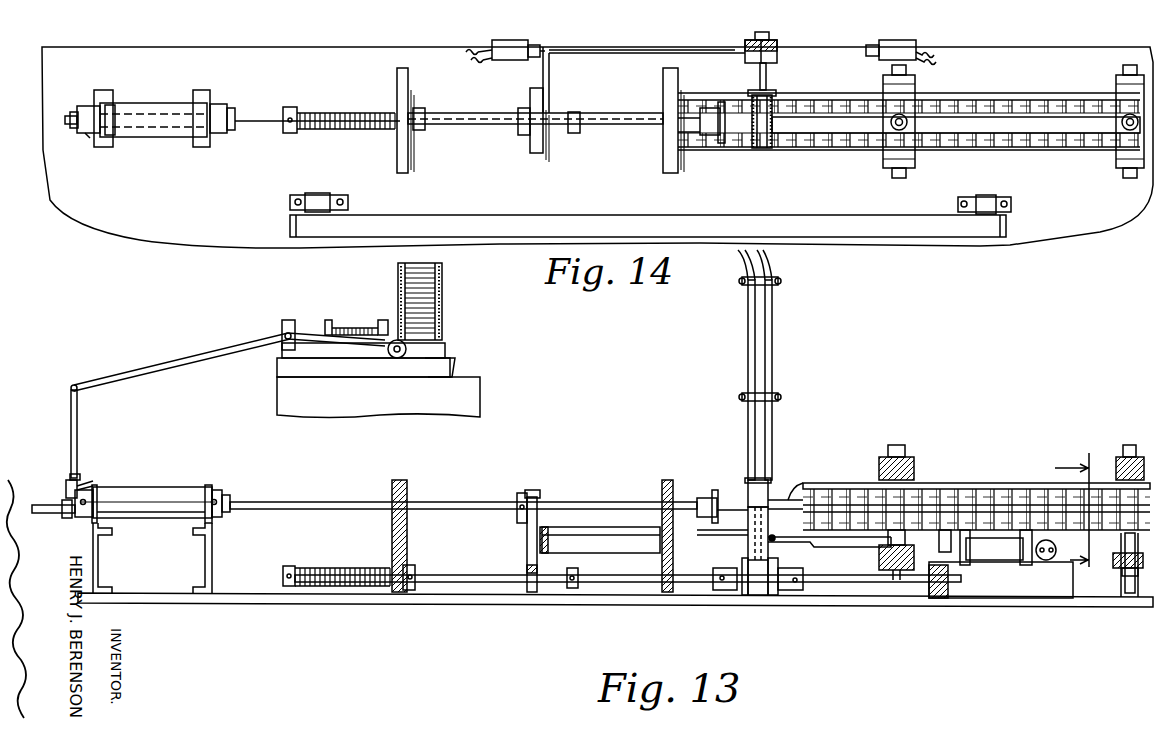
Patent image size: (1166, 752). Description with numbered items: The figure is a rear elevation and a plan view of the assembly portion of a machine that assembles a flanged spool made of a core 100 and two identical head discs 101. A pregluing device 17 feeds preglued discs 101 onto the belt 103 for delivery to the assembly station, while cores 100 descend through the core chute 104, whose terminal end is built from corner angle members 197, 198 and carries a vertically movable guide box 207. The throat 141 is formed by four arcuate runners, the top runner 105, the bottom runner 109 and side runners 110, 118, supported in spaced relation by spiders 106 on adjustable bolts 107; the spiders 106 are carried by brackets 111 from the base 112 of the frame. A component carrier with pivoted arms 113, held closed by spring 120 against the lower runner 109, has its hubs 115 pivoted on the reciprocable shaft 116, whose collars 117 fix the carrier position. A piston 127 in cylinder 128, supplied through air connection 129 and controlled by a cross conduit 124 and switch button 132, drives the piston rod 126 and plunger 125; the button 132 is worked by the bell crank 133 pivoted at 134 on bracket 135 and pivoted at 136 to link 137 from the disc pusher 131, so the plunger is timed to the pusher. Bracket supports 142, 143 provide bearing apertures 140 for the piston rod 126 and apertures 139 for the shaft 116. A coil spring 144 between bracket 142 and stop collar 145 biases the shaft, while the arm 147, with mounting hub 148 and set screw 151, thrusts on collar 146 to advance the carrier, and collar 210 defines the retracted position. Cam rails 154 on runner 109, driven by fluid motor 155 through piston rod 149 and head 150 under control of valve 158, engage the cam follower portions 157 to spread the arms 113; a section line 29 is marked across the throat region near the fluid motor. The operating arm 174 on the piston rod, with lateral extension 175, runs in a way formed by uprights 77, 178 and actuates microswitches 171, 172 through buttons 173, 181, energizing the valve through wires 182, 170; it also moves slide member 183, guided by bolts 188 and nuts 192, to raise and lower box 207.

In FIG. 13, the pregluing device 17 is at (470, 410).
In FIG. 13, the section line 29 is at (1068, 509).
In FIG. 14, the upright 77 is at (745, 53).
In FIG. 14, the core 100 is at (1115, 100).
In FIG. 14, the head disc 101 is at (1090, 105).
In FIG. 13, the head disc 101 is at (440, 313).
In FIG. 14, the belt 103 is at (906, 228).
In FIG. 14, the core chute 104 is at (775, 98).
In FIG. 13, the core chute 104 is at (775, 356).
In FIG. 14, the top runner 105 is at (1065, 116).
In FIG. 13, the top runner 105 is at (1012, 483).
In FIG. 14, the spider 106 is at (915, 163).
In FIG. 13, the spider 106 is at (912, 457).
In FIG. 13, the bolt 107 is at (893, 457).
In FIG. 14, the bottom runner 109 is at (800, 134).
In FIG. 13, the bottom runner 109 is at (1121, 562).
In FIG. 14, the side runner 110 is at (1010, 100).
In FIG. 13, the side runner 110 is at (815, 497).
In FIG. 13, the bracket 111 is at (1130, 607).
In FIG. 13, the base 112 is at (895, 606).
In FIG. 13, the carrier arm 113 is at (760, 595).
In FIG. 13, the hub 115 is at (746, 595).
In FIG. 13, the shaft 116 is at (850, 583).
In FIG. 13, the collar 117 is at (720, 591).
In FIG. 14, the side runner 118 is at (1052, 148).
In FIG. 13, the spring 120 is at (776, 541).
In FIG. 13, the cross conduit 124 is at (182, 518).
In FIG. 14, the plunger 125 is at (712, 136).
In FIG. 13, the plunger 125 is at (702, 498).
In FIG. 14, the piston rod 126 is at (482, 125).
In FIG. 13, the piston rod 126 is at (606, 502).
In FIG. 14, the piston 127 is at (118, 103).
In FIG. 14, the cylinder 128 is at (157, 105).
In FIG. 13, the cylinder 128 is at (152, 487).
In FIG. 13, the air connection 129 is at (47, 513).
In FIG. 13, the disc pusher 131 is at (290, 320).
In FIG. 14, the switch button 132 is at (88, 138).
In FIG. 13, the switch button 132 is at (90, 483).
In FIG. 14, the bell crank 133 is at (68, 118).
In FIG. 13, the bell crank 133 is at (77, 446).
In FIG. 13, the pivot 134 is at (70, 477).
In FIG. 13, the bracket 135 is at (66, 492).
In FIG. 13, the pivot 136 is at (71, 388).
In FIG. 13, the link 137 is at (148, 371).
In FIG. 13, the bearing aperture 139 is at (400, 592).
In FIG. 13, the bearing aperture 140 is at (407, 488).
In FIG. 13, the throat 141 is at (812, 483).
In FIG. 14, the bracket support 142 is at (397, 90).
In FIG. 13, the bracket support 142 is at (408, 480).
In FIG. 14, the bracket support 143 is at (663, 158).
In FIG. 13, the bracket support 143 is at (666, 480).
In FIG. 14, the coil spring 144 is at (355, 110).
In FIG. 13, the coil spring 144 is at (340, 568).
In FIG. 14, the stop collar 145 is at (290, 107).
In FIG. 13, the stop collar 145 is at (290, 566).
In FIG. 14, the collar 146 is at (574, 112).
In FIG. 13, the collar 146 is at (572, 590).
In FIG. 14, the arm 147 is at (540, 145).
In FIG. 13, the arm 147 is at (527, 549).
In FIG. 13, the mounting hub 148 is at (535, 490).
In FIG. 13, the piston rod 149 is at (948, 570).
In FIG. 13, the head 150 is at (952, 546).
In FIG. 13, the set screw 151 is at (517, 500).
In FIG. 13, the cam rail 154 is at (826, 543).
In FIG. 13, the fluid motor 155 is at (1007, 560).
In FIG. 13, the cam follower portion 157 is at (782, 502).
In FIG. 13, the valve 158 is at (1045, 561).
In FIG. 14, the wires 170 is at (940, 62).
In FIG. 14, the microswitch 171 is at (520, 40).
In FIG. 14, the microswitch 172 is at (905, 32).
In FIG. 14, the switch button 173 is at (536, 45).
In FIG. 14, the operating arm 174 is at (656, 50).
In FIG. 14, the lateral extension 175 is at (552, 71).
In FIG. 14, the upright 178 is at (778, 43).
In FIG. 14, the switch button 181 is at (870, 45).
In FIG. 14, the wires 182 is at (468, 60).
In FIG. 14, the slide member 183 is at (778, 51).
In FIG. 14, the bolt 188 is at (760, 78).
In FIG. 14, the nut 192 is at (762, 32).
In FIG. 14, the corner angle member 197 is at (772, 108).
In FIG. 14, the corner angle member 198 is at (762, 140).
In FIG. 13, the corner angle member 198 is at (757, 378).
In FIG. 14, the guide box 207 is at (762, 150).
In FIG. 13, the guide box 207 is at (752, 487).
In FIG. 14, the collar 210 is at (425, 128).
In FIG. 13, the collar 210 is at (415, 568).